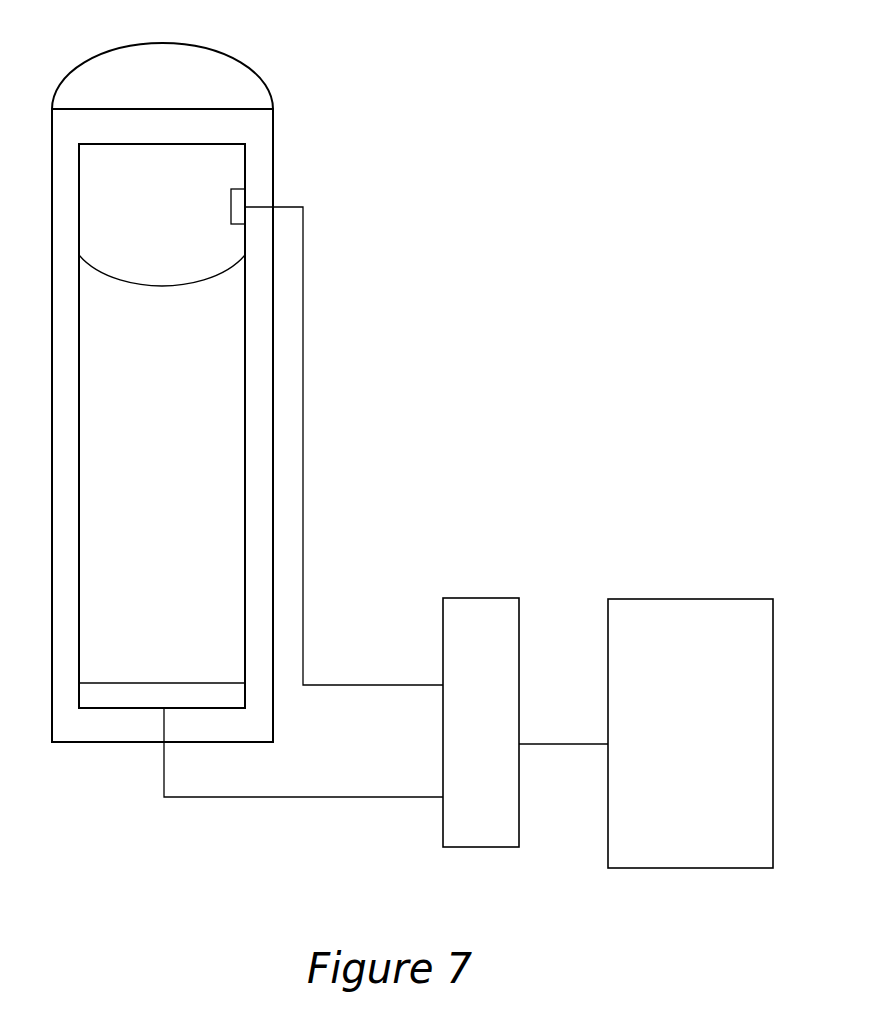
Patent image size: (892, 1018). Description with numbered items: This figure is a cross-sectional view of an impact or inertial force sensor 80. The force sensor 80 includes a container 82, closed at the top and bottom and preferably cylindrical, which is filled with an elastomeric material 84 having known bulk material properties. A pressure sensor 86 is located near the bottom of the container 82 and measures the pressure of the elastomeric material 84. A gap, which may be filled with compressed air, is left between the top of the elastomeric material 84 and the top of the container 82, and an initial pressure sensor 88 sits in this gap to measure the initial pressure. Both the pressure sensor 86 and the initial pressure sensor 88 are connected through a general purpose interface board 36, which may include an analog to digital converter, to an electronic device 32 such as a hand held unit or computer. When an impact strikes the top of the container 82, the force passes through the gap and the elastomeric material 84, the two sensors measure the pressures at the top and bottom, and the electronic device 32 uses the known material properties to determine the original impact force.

The force sensor 80 is at (320, 62).
The container 82 is at (273, 138).
The elastomeric material 84 is at (182, 487).
The pressure sensor 86 is at (151, 692).
The initial pressure sensor 88 is at (231, 207).
The general purpose interface board 36 is at (472, 598).
The electronic device 32 is at (683, 599).